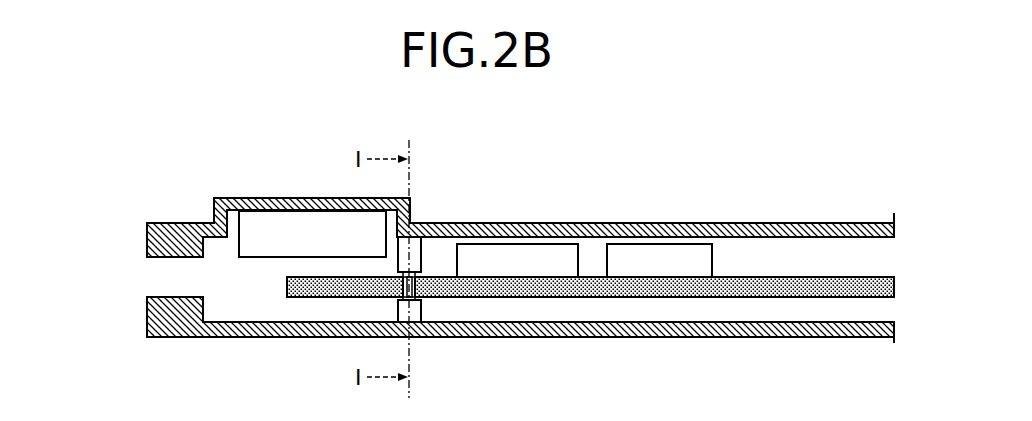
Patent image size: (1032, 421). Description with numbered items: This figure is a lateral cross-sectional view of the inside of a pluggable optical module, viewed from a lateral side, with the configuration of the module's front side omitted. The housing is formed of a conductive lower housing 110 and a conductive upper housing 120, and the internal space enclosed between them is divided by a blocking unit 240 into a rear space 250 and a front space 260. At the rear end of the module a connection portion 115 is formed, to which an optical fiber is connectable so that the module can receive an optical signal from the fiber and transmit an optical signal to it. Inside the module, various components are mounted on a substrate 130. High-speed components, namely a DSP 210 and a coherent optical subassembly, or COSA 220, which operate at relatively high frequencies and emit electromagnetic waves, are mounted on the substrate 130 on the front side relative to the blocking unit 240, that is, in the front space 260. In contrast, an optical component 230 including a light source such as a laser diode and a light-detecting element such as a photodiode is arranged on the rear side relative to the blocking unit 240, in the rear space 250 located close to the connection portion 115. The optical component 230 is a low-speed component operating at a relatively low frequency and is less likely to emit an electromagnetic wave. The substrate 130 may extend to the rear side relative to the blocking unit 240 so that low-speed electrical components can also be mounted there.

The lower housing 110 is at (260, 332).
The connection portion 115 is at (153, 280).
The upper housing 120 is at (230, 200).
The substrate 130 is at (758, 287).
The DSP 210 is at (678, 252).
The coherent optical subassembly (COSA) 220 is at (535, 252).
The optical component 230 is at (295, 224).
The blocking unit 240 is at (430, 257).
The rear space 250 is at (230, 303).
The front space 260 is at (507, 302).